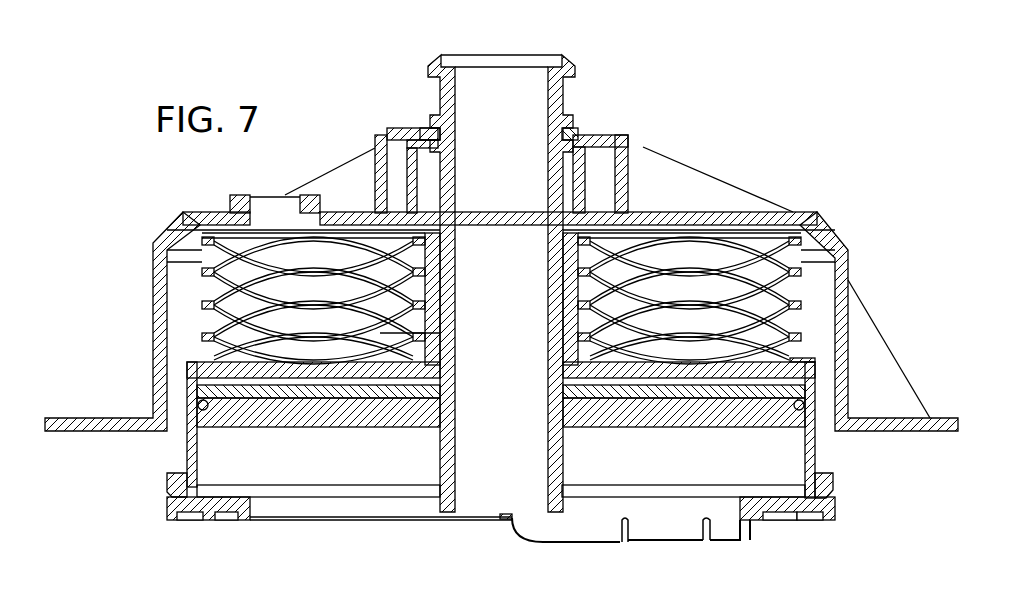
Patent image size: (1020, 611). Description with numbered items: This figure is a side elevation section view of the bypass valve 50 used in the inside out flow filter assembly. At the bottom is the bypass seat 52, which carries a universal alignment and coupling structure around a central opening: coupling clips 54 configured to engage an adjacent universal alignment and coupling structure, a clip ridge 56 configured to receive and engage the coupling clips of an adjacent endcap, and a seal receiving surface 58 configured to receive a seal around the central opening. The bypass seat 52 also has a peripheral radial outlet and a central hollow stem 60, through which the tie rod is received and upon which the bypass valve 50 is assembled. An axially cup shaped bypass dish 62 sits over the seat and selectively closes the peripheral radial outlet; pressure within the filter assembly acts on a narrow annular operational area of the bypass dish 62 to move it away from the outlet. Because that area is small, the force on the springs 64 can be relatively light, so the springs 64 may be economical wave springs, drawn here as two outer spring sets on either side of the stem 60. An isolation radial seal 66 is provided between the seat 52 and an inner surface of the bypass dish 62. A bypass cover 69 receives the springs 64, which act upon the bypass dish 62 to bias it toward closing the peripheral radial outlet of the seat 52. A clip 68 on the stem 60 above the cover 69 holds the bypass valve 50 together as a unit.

The bypass valve 50 is at (300, 92).
The bypass seat 52 is at (757, 521).
The coupling clips 54 is at (632, 543).
The clip ridge 56 is at (250, 508).
The seal receiving surface 58 is at (810, 521).
The central hollow stem 60 is at (547, 465).
The bypass dish 62 is at (185, 453).
The springs 64 is at (836, 290).
The isolation radial seal 66 is at (803, 410).
The clip 68 is at (580, 132).
The bypass cover 69 is at (812, 212).